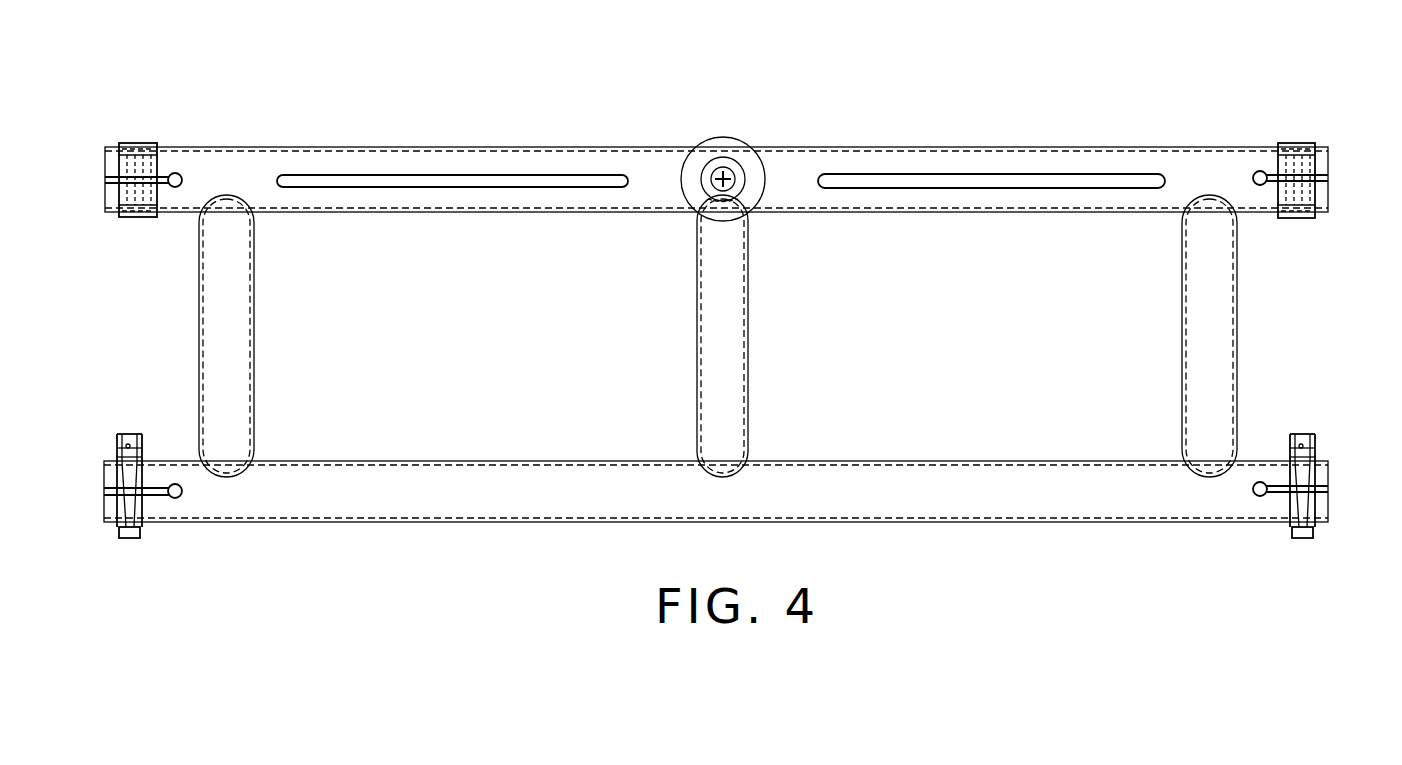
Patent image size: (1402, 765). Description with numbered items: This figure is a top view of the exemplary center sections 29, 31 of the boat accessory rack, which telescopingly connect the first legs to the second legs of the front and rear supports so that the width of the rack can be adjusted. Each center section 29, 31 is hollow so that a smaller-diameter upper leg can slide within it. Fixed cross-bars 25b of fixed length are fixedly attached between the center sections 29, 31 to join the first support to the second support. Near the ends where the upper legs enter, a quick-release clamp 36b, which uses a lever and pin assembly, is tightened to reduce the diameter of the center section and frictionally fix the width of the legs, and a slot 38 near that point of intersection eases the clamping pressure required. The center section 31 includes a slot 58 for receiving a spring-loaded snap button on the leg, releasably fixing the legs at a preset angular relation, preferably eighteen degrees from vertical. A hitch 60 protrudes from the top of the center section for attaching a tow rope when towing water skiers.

The fixed cross-bar 25b is at (198, 343).
The center section 29 is at (1003, 524).
The center section 31 is at (1018, 157).
The quick-release clamp 36b is at (1300, 540).
The slot 38 is at (1318, 178).
The slot 58 is at (368, 180).
The hitch 60 is at (733, 170).